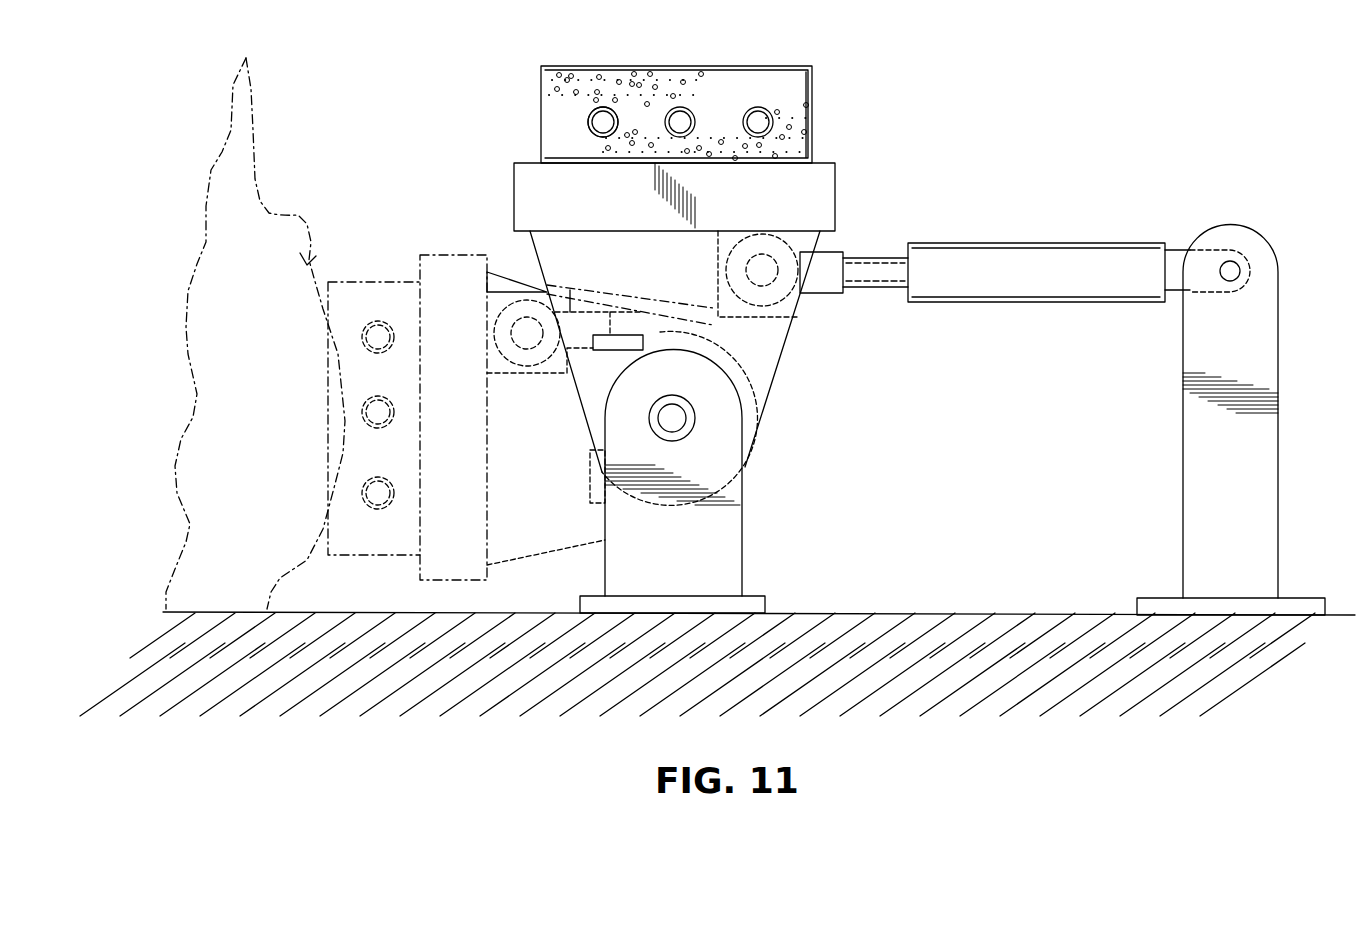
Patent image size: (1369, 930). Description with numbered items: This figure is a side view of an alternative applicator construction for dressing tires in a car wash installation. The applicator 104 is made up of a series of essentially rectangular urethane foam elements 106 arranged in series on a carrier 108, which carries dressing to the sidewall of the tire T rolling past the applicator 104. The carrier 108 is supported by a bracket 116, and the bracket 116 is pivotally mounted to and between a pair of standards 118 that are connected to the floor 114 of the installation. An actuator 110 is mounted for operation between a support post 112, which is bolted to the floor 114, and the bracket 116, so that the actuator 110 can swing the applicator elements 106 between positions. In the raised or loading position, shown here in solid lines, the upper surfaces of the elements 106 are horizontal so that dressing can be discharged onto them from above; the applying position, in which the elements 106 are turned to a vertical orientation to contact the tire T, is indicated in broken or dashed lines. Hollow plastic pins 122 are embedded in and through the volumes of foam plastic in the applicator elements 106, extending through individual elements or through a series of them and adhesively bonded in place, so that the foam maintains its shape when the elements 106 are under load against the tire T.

The tire T is at (318, 273).
The applicator 104 is at (871, 96).
The urethane foam elements 106 is at (688, 18).
The carrier 108 is at (838, 188).
The actuator 110 is at (1090, 205).
The support post 112 is at (1278, 360).
The floor 114 is at (958, 610).
The bracket 116 is at (793, 357).
The standards 118 is at (745, 533).
The hollow plastic pins 122 is at (598, 106).